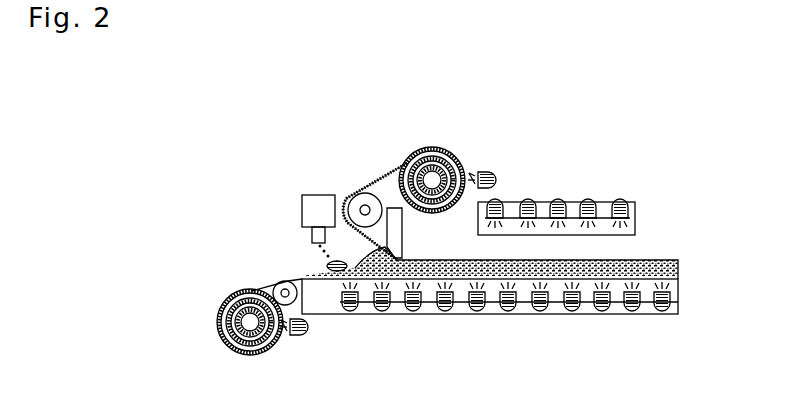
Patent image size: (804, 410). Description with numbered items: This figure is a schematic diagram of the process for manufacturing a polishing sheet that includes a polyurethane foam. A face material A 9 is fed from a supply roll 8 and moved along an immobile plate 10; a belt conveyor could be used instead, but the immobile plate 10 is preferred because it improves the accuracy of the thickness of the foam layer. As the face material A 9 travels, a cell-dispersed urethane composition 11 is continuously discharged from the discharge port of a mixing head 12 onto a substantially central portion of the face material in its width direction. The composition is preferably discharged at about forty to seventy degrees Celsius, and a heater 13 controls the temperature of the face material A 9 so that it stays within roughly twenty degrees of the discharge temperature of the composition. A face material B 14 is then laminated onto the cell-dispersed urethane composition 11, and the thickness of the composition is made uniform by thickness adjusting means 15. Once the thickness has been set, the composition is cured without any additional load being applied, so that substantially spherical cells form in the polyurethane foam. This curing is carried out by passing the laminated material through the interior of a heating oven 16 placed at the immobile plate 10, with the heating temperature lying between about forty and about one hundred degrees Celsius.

The supply roll 8 is at (443, 158).
The face material A 9 is at (277, 280).
The immobile plate 10 is at (428, 313).
The cell-dispersed urethane composition 11 is at (313, 260).
The mixing head 12 is at (318, 205).
The heater 13 is at (493, 175).
The face material B 14 is at (383, 172).
The thickness adjusting means 15 is at (393, 240).
The heating oven 16 is at (590, 206).